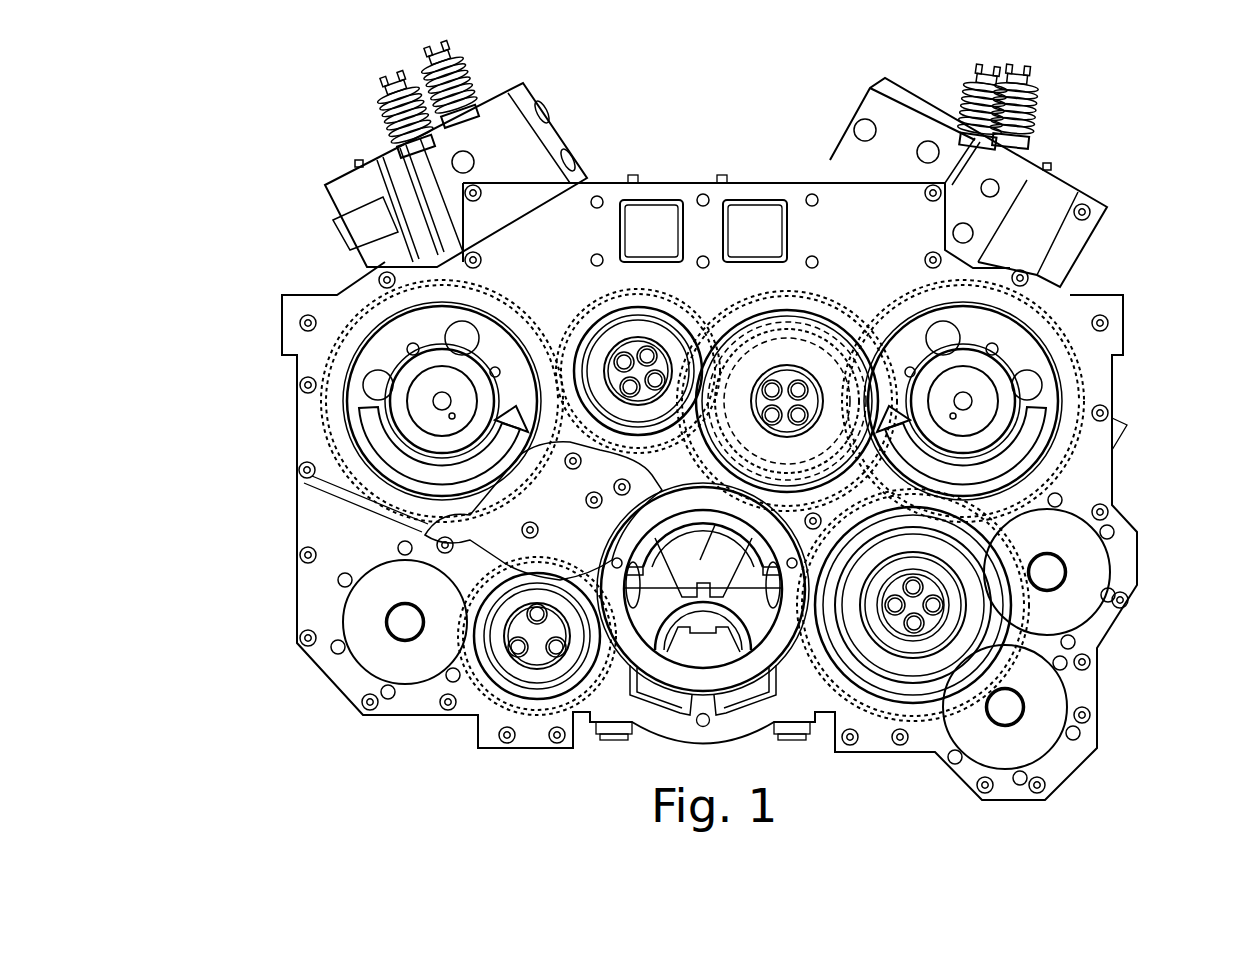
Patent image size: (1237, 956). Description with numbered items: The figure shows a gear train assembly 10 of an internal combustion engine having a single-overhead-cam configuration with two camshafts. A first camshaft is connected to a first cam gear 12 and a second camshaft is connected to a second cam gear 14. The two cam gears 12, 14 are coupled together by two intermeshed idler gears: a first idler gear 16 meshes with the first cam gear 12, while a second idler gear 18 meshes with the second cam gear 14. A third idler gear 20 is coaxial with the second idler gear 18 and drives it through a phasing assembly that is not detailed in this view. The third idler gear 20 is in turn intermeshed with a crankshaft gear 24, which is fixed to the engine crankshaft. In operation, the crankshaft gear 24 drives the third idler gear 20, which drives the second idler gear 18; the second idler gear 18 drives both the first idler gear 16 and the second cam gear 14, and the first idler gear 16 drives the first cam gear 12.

The gear train assembly 10 is at (1097, 143).
The first cam gear 12 is at (316, 414).
The second cam gear 14 is at (1084, 465).
The first idler gear 16 is at (582, 301).
The second idler gear 18 is at (818, 330).
The third idler gear 20 is at (845, 290).
The crankshaft gear 24 is at (596, 550).